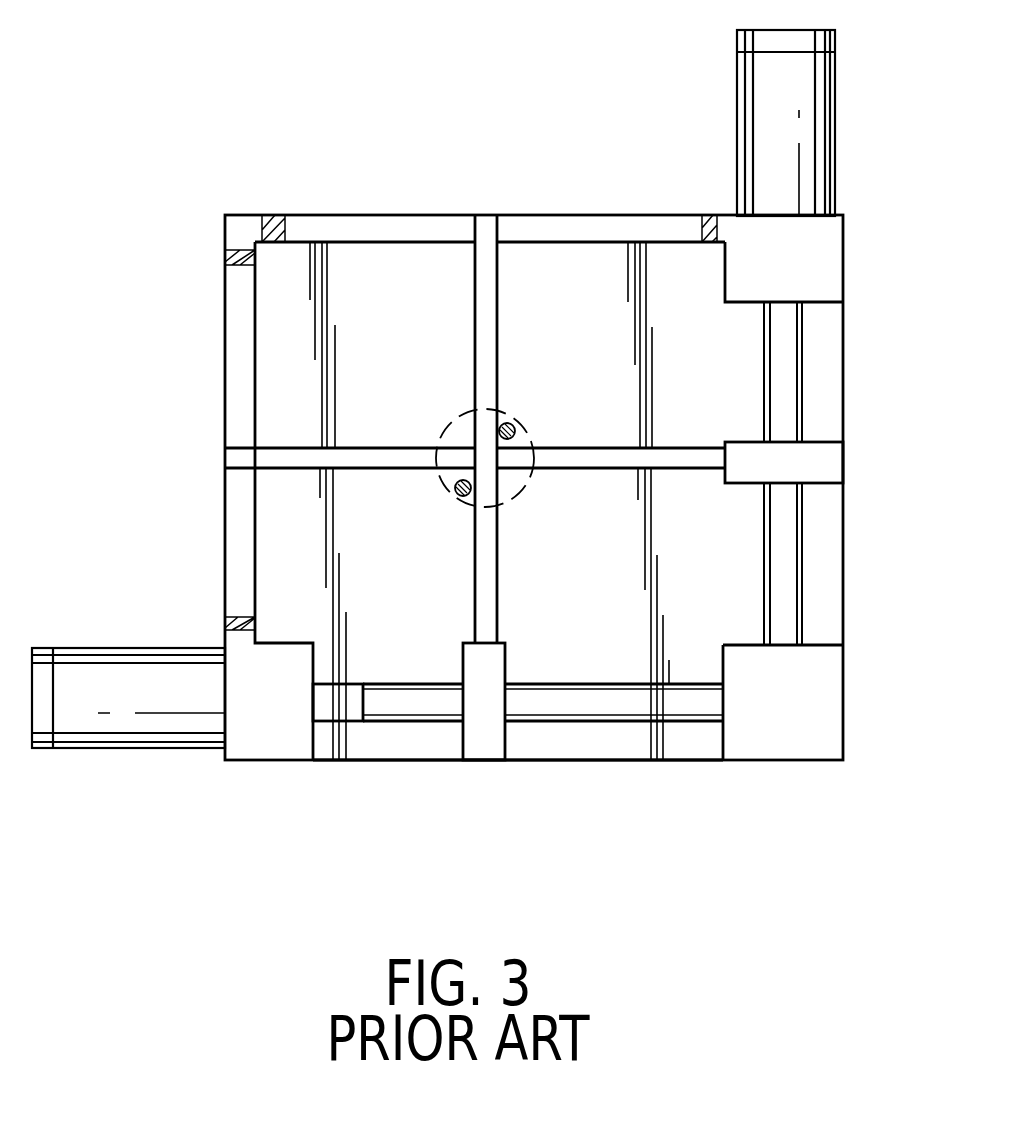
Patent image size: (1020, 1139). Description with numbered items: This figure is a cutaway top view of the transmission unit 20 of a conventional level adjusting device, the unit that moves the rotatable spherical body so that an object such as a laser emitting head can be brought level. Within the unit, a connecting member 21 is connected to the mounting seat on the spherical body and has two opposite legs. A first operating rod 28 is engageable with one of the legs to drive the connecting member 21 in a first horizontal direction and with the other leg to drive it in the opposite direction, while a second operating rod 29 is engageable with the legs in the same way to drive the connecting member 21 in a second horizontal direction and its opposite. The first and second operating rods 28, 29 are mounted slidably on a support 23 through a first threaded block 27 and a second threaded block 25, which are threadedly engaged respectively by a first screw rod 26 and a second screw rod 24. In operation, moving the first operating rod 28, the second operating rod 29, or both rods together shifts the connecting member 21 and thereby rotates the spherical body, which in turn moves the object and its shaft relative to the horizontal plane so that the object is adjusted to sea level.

The transmission unit 20 is at (682, 762).
The connecting member 21 is at (520, 443).
The support 23 is at (568, 760).
The second screw rod 24 is at (803, 363).
The second threaded block 25 is at (815, 452).
The first screw rod 26 is at (385, 722).
The first threaded block 27 is at (472, 738).
The first operating rod 28 is at (487, 325).
The second operating rod 29 is at (612, 457).